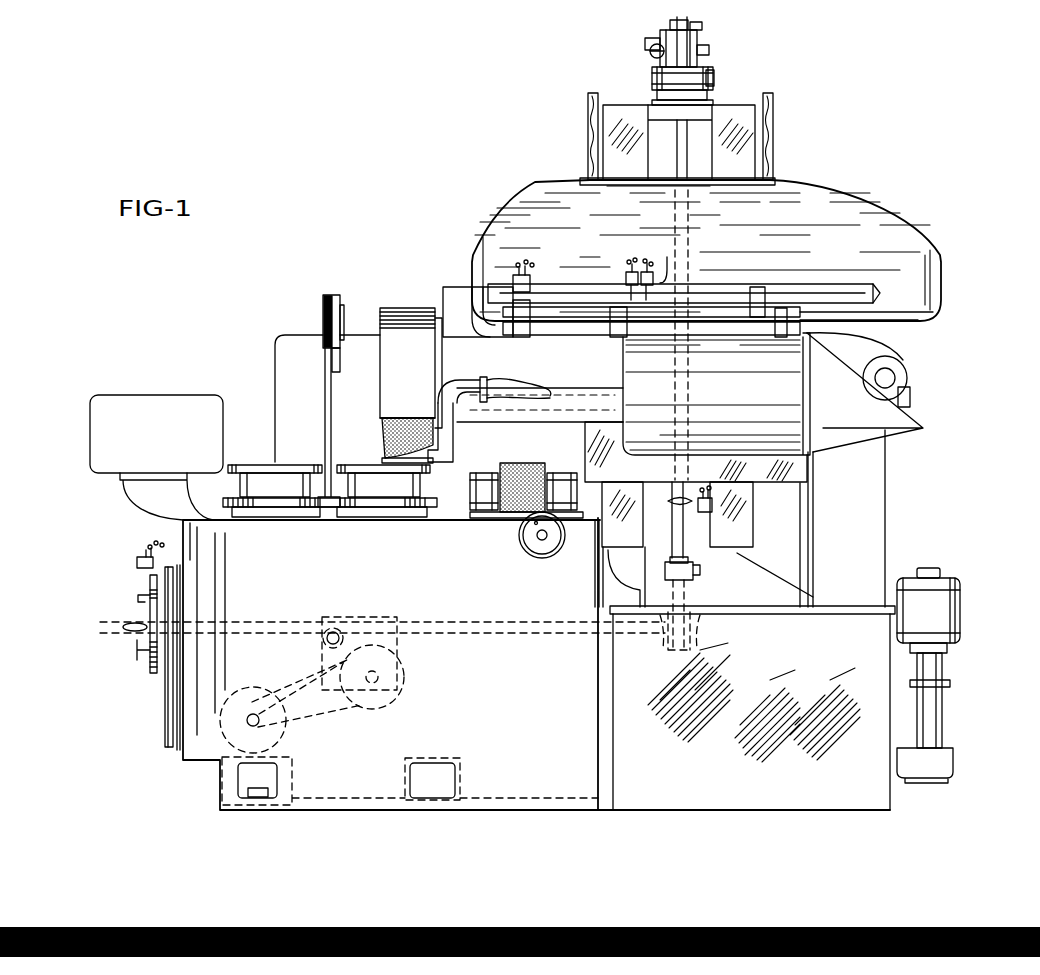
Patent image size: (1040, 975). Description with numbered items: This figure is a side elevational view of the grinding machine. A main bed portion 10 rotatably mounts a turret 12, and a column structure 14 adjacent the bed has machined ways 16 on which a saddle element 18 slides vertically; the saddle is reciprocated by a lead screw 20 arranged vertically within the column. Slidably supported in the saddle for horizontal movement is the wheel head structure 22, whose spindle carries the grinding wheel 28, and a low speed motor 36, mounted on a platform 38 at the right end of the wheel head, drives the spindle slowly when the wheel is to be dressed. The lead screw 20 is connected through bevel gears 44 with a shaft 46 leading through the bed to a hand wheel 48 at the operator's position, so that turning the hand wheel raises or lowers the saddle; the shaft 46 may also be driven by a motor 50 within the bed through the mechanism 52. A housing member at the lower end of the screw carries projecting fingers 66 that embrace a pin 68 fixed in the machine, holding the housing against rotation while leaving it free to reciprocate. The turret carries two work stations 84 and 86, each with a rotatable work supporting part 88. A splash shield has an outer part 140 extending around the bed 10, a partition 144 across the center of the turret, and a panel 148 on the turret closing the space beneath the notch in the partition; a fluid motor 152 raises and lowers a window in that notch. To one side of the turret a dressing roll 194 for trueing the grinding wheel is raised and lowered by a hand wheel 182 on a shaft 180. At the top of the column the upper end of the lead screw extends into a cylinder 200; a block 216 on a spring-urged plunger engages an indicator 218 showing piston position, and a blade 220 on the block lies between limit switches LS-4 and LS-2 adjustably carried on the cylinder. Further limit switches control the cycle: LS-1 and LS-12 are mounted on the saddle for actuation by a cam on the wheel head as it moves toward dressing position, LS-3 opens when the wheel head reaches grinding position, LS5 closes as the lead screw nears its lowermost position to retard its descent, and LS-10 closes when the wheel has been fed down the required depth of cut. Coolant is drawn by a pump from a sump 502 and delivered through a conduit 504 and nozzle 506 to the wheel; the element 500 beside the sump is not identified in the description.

The main bed portion 10 is at (572, 44).
The turret 12 is at (666, 551).
The column structure 14 is at (800, 527).
The machined ways 16 is at (640, 142).
The saddle element 18 is at (860, 213).
The lead screw 20 is at (690, 168).
The wheel head structure 22 is at (462, 298).
The grinding wheel 28 is at (412, 432).
The motor 36 is at (904, 382).
The platform 38 is at (905, 432).
The bevel gears 44 is at (687, 612).
The shaft 46 is at (483, 629).
The hand wheel 48 is at (150, 672).
The motor 50 is at (272, 738).
The mechanism 52 is at (400, 660).
The projecting fingers 66 is at (700, 577).
The pin 68 is at (700, 567).
The work station 84 is at (265, 478).
The work station 86 is at (390, 485).
The rotatable work supporting part 88 is at (372, 480).
The outer part 140 is at (283, 345).
The partition 144 is at (339, 366).
The panel 148 is at (315, 508).
The fluid motor 152 is at (326, 300).
The shaft 180 is at (542, 542).
The hand wheel 182 is at (530, 548).
The dressing roll 194 is at (525, 472).
The cylinder 200 is at (655, 80).
The block 216 is at (660, 38).
The indicator 218 is at (650, 52).
The blade 220 is at (693, 50).
The pump motor 500 is at (950, 606).
The sump 502 is at (833, 661).
The conduit 504 is at (520, 383).
The nozzle 506 is at (455, 458).
The limit switch LS-1 is at (648, 270).
The limit switch LS-2 is at (680, 72).
The limit switch LS-3 is at (530, 295).
The limit switch LS-4 is at (697, 36).
The limit switch LS5 is at (706, 512).
The limit switch LS-10 is at (137, 562).
The limit switch LS-12 is at (531, 283).